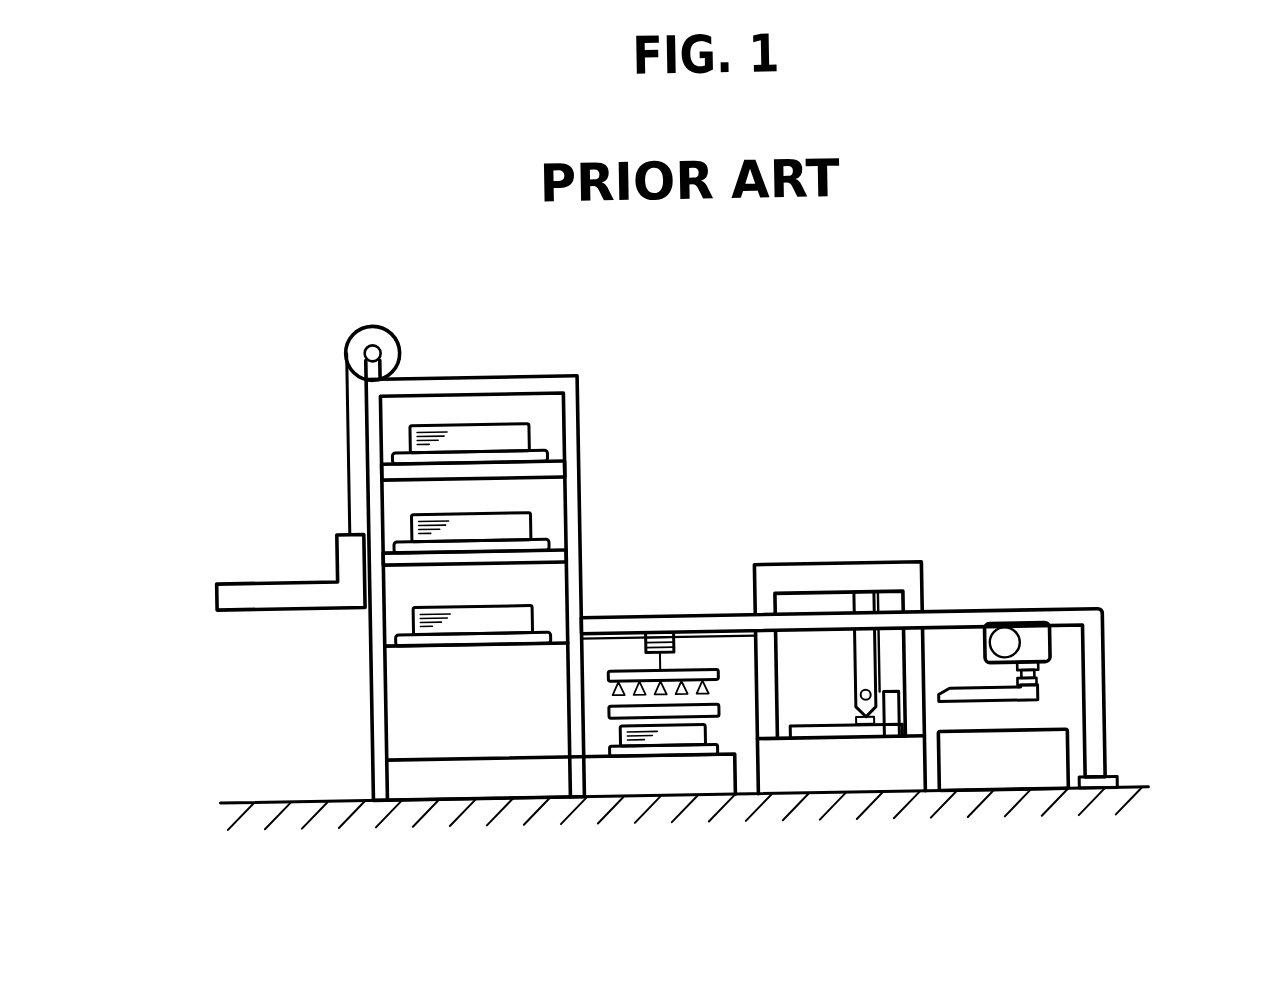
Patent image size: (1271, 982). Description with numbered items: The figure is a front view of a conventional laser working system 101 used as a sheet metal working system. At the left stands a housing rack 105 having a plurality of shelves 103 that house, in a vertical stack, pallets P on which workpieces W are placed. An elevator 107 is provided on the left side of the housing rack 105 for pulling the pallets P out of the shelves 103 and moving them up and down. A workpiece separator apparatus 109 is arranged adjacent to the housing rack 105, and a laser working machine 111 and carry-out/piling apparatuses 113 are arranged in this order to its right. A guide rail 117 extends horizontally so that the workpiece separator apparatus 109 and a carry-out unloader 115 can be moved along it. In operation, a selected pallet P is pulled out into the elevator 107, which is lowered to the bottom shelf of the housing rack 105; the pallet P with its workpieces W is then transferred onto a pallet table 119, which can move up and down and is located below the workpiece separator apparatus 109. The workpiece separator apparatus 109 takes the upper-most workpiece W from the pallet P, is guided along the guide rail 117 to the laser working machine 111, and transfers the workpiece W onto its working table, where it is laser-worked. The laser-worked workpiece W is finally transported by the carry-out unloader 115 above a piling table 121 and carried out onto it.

The laser working system 101 is at (700, 576).
The shelves 103 is at (516, 554).
The housing rack 105 is at (424, 352).
The elevator 107 is at (285, 581).
The workpiece separator apparatus 109 is at (701, 606).
The laser working machine 111 is at (843, 556).
The carry-out/piling apparatuses 113 is at (1094, 597).
The carry-out unloader 115 is at (1052, 690).
The guide rail 117 is at (1032, 626).
The pallet table 119 is at (657, 775).
The piling table 121 is at (997, 781).
The workpiece W is at (479, 419).
The pallet P is at (548, 446).